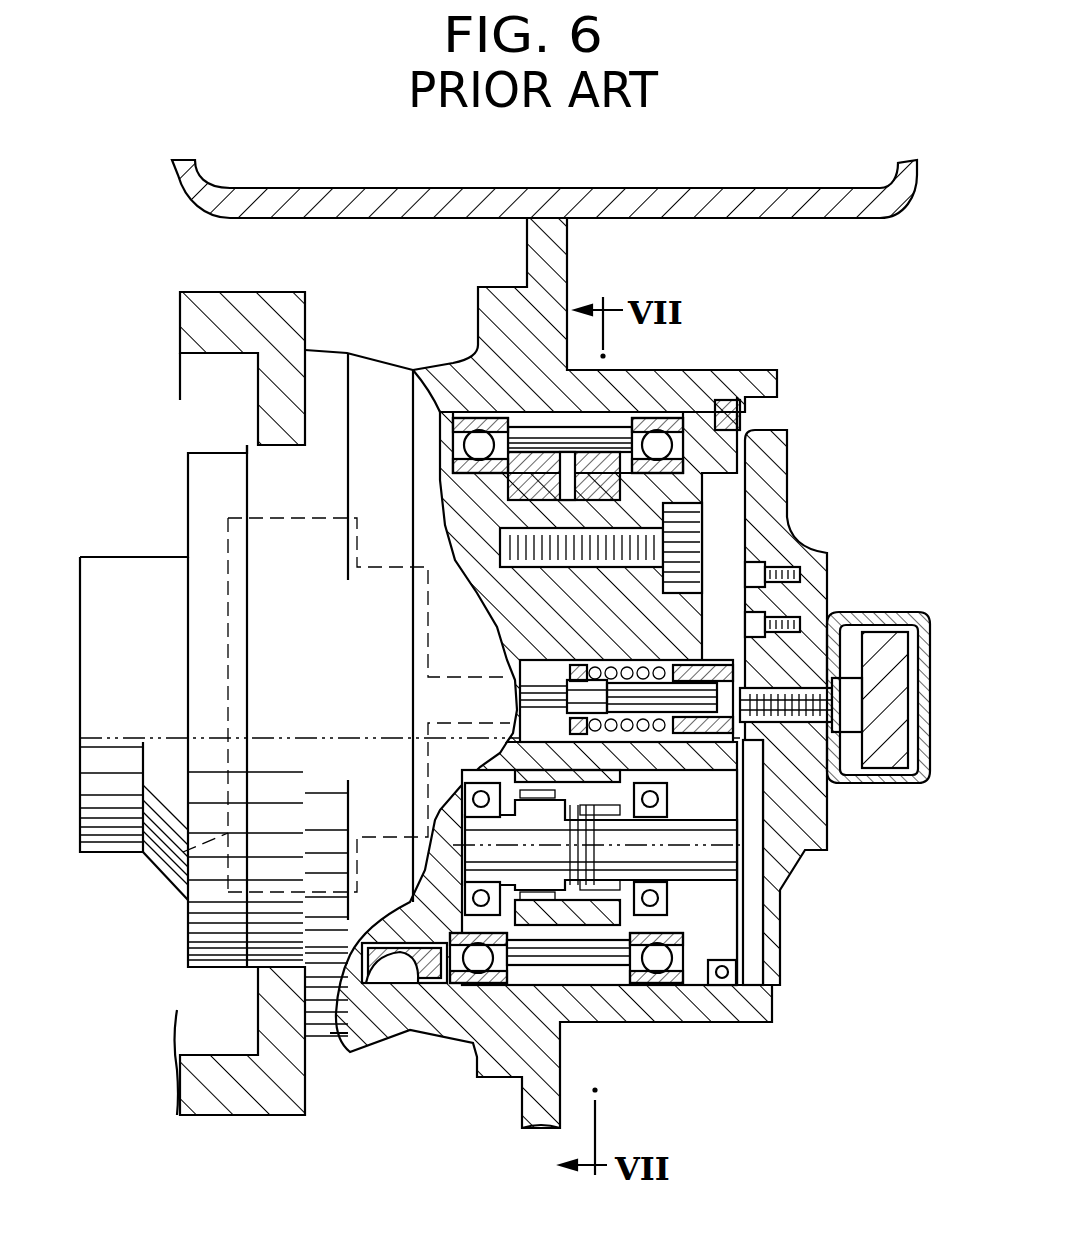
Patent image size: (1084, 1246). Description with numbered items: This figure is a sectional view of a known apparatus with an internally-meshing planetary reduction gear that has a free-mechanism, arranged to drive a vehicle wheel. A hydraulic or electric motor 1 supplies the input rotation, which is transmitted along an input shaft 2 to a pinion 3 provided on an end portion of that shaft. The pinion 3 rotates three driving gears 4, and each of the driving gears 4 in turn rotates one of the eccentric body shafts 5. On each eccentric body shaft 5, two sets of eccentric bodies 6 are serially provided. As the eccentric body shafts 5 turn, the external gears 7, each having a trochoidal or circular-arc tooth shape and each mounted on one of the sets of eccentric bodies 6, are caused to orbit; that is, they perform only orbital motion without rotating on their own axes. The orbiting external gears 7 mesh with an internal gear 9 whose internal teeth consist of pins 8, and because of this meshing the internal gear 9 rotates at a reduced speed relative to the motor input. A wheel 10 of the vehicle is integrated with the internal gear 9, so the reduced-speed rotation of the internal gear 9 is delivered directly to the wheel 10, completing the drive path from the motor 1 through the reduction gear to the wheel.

The motor 1 is at (152, 860).
The input shaft 2 is at (586, 697).
The pinion 3 is at (723, 658).
The driving gears 4 is at (779, 949).
The eccentric body shafts 5 is at (779, 896).
The eccentric bodies 6 is at (601, 890).
The external gears 7 is at (607, 950).
The pins 8 is at (553, 973).
The internal gear 9 is at (733, 1015).
The wheel 10 is at (735, 195).